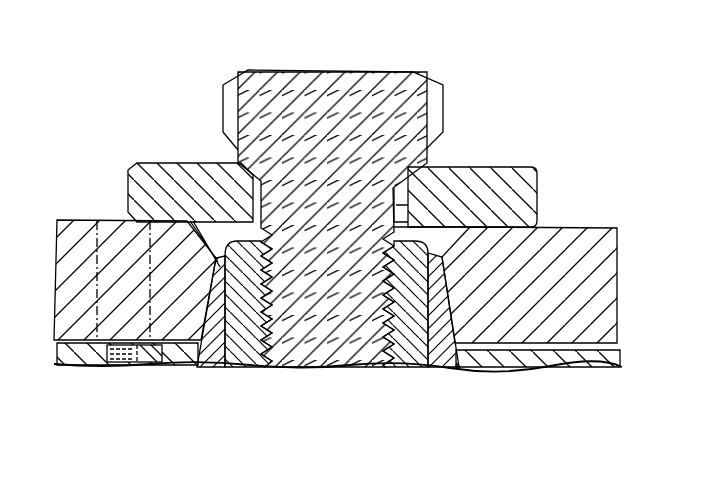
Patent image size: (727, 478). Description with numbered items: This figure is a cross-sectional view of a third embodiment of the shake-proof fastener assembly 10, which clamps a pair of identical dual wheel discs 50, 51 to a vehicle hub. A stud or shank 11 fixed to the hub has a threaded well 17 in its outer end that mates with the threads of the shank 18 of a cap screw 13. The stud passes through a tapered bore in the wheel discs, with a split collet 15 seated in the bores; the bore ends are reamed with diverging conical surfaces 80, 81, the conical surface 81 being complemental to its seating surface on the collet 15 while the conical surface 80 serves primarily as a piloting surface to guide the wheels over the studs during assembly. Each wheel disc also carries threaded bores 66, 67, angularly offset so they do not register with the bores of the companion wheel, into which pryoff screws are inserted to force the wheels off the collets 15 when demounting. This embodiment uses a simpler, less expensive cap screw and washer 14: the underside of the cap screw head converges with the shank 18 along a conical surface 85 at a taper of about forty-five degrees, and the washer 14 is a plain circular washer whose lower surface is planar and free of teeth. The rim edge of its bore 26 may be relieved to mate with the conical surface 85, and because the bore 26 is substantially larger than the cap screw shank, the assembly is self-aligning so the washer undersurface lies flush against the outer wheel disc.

The fastener assembly 10 is at (130, 96).
The cap screw 13 is at (357, 222).
The washer 14 is at (524, 160).
The conical surface 85 is at (238, 168).
The bore of washer 26 is at (406, 200).
The threaded bore 66 is at (101, 230).
The diverging conical surface 80 is at (206, 250).
The diverging conical surface 81 is at (209, 313).
The wheel disc 51 is at (611, 287).
The wheel disc 50 is at (614, 363).
The threaded bore 67 is at (115, 363).
The threaded well 17 is at (275, 363).
The shank of cap screw 18 is at (332, 250).
The stud or shank 11 is at (412, 352).
The split collet 15 is at (445, 368).